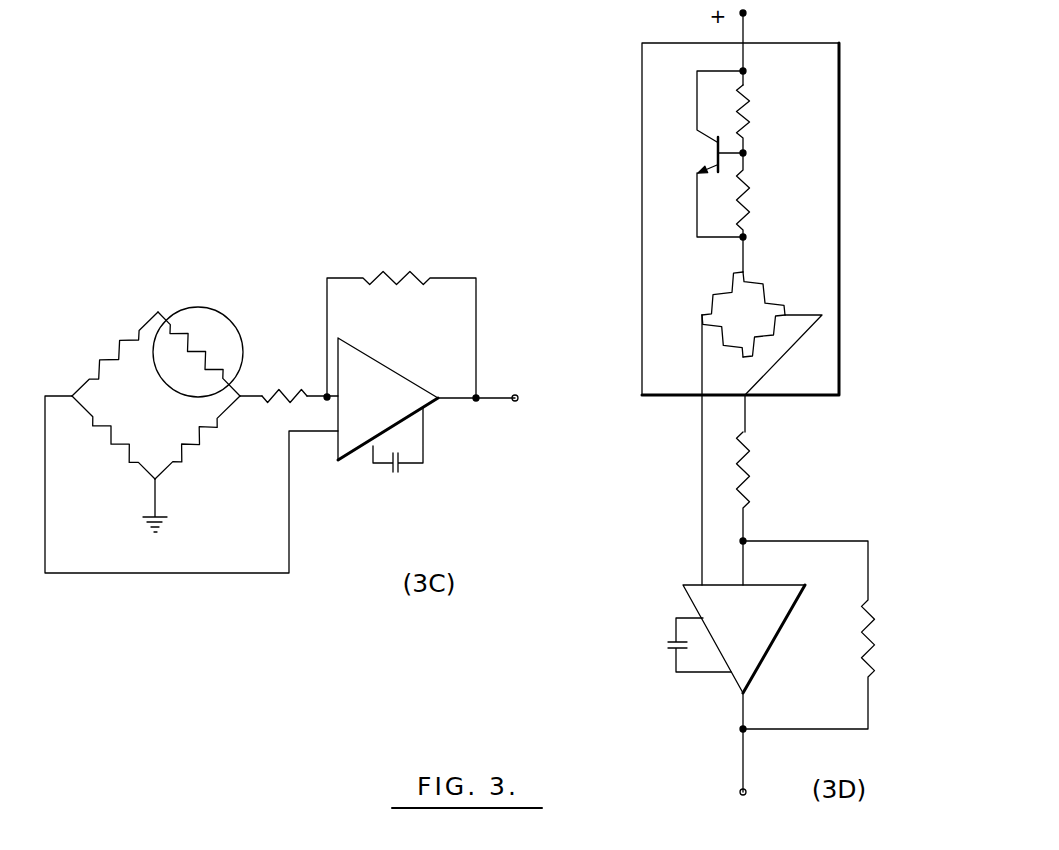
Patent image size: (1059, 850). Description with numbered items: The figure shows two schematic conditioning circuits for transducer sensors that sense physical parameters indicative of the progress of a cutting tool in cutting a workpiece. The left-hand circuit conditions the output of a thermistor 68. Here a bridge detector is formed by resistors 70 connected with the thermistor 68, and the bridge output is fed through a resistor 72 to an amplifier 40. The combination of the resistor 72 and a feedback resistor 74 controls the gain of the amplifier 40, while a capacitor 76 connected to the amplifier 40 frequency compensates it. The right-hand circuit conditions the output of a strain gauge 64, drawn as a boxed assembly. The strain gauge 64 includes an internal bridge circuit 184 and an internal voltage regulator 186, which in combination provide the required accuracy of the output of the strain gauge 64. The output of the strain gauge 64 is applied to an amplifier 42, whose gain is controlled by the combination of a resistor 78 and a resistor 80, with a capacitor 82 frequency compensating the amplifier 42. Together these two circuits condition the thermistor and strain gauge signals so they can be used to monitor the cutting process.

In FIG. 3C, the amplifier 40 is at (360, 409).
In FIG. 3D, the amplifier 42 is at (756, 638).
In FIG. 3D, the strain gauge 64 is at (826, 233).
In FIG. 3C, the thermistor 68 is at (243, 334).
In FIG. 3C, the resistors 70 is at (115, 343).
In FIG. 3C, the resistor 72 is at (281, 388).
In FIG. 3C, the resistor 74 is at (398, 270).
In FIG. 3C, the capacitor 76 is at (391, 473).
In FIG. 3D, the resistor 78 is at (748, 476).
In FIG. 3D, the resistor 80 is at (867, 622).
In FIG. 3D, the capacitor 82 is at (673, 636).
In FIG. 3D, the internal bridge circuit 184 is at (688, 294).
In FIG. 3D, the internal voltage regulator 186 is at (686, 144).